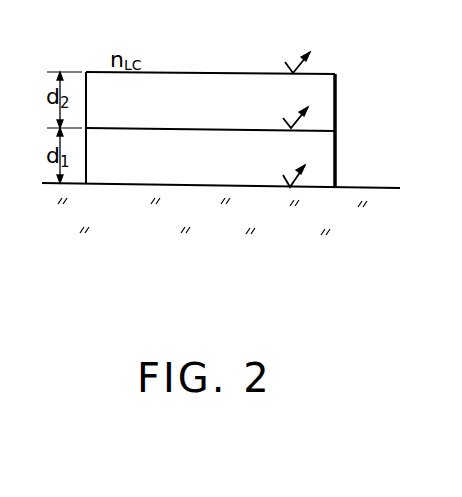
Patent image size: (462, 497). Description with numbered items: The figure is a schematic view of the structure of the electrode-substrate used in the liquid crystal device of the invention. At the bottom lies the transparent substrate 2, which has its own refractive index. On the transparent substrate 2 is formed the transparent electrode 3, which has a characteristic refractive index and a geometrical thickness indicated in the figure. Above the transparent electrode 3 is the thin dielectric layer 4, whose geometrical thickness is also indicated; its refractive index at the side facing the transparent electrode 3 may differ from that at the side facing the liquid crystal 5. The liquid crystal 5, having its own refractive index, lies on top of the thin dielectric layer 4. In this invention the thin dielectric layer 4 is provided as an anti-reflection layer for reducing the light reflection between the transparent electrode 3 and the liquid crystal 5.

The transparent substrate 2 is at (375, 224).
The transparent electrode 3 is at (325, 160).
The thin dielectric layer 4 is at (327, 105).
The liquid crystal 5 is at (325, 58).